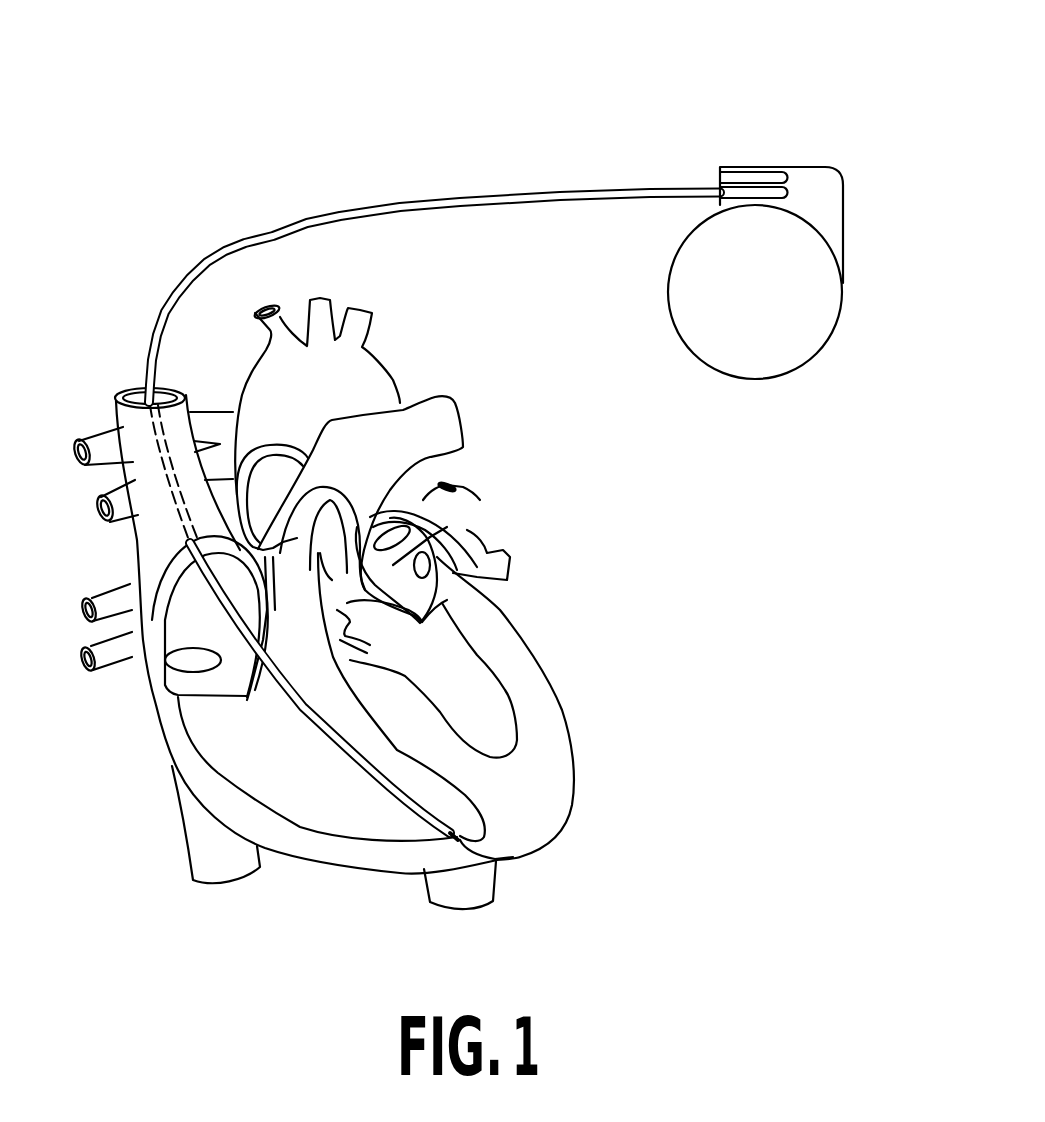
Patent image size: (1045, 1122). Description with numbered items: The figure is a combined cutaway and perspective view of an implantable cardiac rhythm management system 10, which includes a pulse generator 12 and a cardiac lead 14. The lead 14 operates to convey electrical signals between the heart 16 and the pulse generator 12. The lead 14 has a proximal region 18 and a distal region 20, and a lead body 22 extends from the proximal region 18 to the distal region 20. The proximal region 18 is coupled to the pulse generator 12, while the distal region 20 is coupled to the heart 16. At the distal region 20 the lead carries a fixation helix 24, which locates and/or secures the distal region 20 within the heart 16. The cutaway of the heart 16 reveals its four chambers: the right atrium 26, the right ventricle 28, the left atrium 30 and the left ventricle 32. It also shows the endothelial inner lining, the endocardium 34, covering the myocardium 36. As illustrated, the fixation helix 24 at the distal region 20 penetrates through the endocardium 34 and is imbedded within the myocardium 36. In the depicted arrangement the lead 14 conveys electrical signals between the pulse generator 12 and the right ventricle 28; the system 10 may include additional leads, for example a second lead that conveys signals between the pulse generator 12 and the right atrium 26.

The cardiac rhythm management (CRM) system 10 is at (357, 84).
The pulse generator 12 is at (760, 214).
The cardiac lead 14 is at (377, 207).
The heart 16 is at (532, 432).
The proximal region 18 is at (671, 190).
The distal region 20 is at (393, 800).
The lead body 22 is at (271, 233).
The fixation helix 24 is at (505, 857).
The right atrium 26 is at (180, 587).
The right ventricle 28 is at (240, 755).
The left atrium 30 is at (430, 523).
The left ventricle 32 is at (483, 685).
The endocardium 34 is at (245, 787).
The myocardium 36 is at (348, 860).